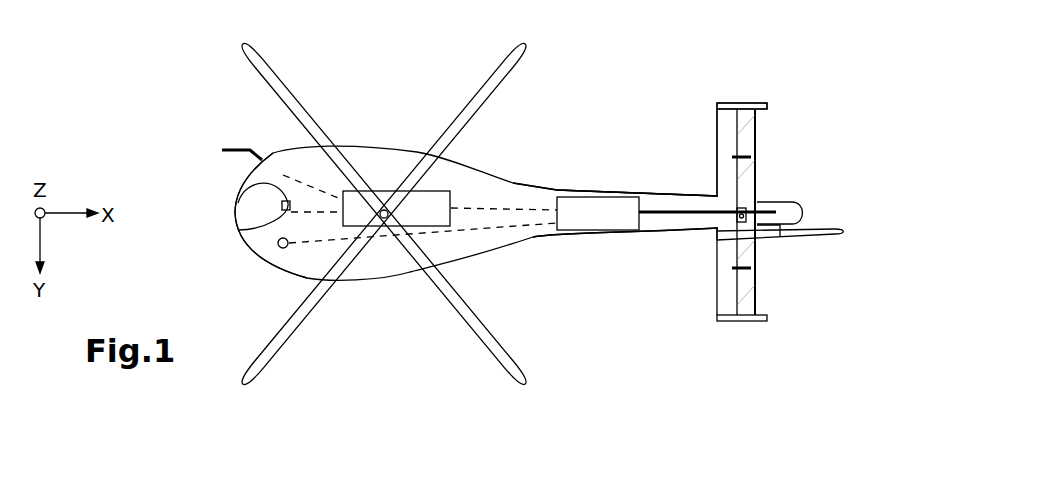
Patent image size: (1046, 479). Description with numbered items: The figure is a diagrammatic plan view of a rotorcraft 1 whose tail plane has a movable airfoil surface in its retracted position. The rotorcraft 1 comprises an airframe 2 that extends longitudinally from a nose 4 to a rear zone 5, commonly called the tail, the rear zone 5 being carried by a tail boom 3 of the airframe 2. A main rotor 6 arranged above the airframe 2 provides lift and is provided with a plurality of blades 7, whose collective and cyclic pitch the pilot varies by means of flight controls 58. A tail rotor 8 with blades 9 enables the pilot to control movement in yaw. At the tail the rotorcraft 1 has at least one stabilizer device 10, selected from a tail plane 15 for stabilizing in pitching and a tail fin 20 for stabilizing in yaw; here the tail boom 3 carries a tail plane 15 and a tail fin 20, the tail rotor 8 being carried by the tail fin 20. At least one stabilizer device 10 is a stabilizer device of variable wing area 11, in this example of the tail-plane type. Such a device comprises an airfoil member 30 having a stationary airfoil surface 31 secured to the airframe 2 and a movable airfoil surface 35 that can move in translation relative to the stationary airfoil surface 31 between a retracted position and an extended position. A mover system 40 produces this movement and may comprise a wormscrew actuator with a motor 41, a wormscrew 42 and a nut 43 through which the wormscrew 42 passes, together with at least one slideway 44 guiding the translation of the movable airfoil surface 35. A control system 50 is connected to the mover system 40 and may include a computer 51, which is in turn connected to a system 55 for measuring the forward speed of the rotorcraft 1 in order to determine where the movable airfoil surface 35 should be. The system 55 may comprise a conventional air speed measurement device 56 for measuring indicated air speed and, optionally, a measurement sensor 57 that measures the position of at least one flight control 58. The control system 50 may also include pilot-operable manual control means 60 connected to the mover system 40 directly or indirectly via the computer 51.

The rotorcraft 1 is at (593, 366).
The airframe 2 is at (491, 252).
The tail boom 3 is at (600, 236).
The nose 4 is at (237, 203).
The rear zone 5 is at (786, 383).
The main rotor 6 is at (449, 92).
The blades 7 is at (492, 66).
The tail rotor 8 is at (803, 253).
The blades 9 is at (831, 236).
The stabilizer device 10 is at (717, 113).
The stabilizer device of variable wing area 11 is at (742, 149).
The tail plane 15 is at (742, 149).
The tail fin 20 is at (780, 219).
The airfoil member 30 is at (692, 295).
The stationary airfoil surface 31 is at (718, 180).
The movable airfoil surface 35 is at (757, 180).
The mover system 40 is at (645, 182).
The motor 41 is at (598, 213).
The wormscrew 42 is at (665, 214).
The nut 43 is at (718, 229).
The slideway 44 is at (744, 157).
The control system 50 is at (306, 258).
The computer 51 is at (396, 208).
The system for measuring the forward speed 55 is at (225, 76).
The air speed measurement device 56 is at (236, 150).
The measurement sensor 57 is at (240, 190).
The flight controls 58 is at (240, 229).
The manual control means 60 is at (277, 244).